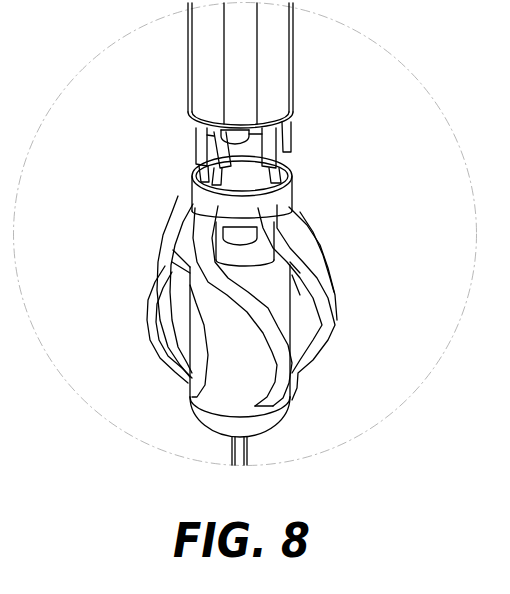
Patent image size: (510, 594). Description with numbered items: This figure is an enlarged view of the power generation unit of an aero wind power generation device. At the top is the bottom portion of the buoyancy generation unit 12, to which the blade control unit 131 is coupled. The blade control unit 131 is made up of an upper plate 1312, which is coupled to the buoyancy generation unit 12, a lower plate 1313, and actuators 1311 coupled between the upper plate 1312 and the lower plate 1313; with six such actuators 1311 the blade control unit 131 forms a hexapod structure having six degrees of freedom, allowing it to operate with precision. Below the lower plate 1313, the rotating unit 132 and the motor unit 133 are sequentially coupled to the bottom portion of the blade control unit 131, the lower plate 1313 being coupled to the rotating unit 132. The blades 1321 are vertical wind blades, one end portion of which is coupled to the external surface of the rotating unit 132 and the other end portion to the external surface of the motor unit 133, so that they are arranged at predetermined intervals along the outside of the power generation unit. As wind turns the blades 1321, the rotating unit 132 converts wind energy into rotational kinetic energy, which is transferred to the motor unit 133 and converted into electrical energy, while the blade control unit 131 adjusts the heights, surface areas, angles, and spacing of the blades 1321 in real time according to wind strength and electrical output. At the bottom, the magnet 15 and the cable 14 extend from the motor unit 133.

The buoyancy generation unit 12 is at (310, 66).
The blade control unit 131 is at (294, 145).
The actuator 1311 is at (289, 146).
The upper plate 1312 is at (293, 116).
The lower plate 1313 is at (292, 180).
The rotating unit 132 is at (291, 195).
The blades 1321 is at (336, 307).
The motor unit 133 is at (190, 377).
The magnet 15 is at (195, 417).
The cable 14 is at (243, 452).